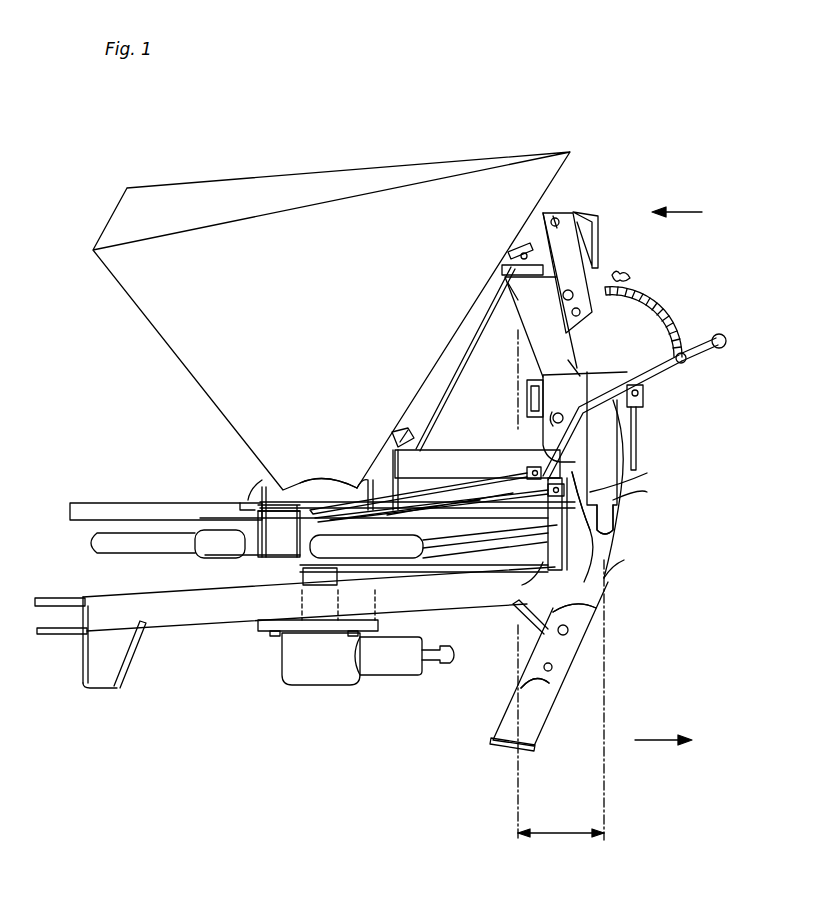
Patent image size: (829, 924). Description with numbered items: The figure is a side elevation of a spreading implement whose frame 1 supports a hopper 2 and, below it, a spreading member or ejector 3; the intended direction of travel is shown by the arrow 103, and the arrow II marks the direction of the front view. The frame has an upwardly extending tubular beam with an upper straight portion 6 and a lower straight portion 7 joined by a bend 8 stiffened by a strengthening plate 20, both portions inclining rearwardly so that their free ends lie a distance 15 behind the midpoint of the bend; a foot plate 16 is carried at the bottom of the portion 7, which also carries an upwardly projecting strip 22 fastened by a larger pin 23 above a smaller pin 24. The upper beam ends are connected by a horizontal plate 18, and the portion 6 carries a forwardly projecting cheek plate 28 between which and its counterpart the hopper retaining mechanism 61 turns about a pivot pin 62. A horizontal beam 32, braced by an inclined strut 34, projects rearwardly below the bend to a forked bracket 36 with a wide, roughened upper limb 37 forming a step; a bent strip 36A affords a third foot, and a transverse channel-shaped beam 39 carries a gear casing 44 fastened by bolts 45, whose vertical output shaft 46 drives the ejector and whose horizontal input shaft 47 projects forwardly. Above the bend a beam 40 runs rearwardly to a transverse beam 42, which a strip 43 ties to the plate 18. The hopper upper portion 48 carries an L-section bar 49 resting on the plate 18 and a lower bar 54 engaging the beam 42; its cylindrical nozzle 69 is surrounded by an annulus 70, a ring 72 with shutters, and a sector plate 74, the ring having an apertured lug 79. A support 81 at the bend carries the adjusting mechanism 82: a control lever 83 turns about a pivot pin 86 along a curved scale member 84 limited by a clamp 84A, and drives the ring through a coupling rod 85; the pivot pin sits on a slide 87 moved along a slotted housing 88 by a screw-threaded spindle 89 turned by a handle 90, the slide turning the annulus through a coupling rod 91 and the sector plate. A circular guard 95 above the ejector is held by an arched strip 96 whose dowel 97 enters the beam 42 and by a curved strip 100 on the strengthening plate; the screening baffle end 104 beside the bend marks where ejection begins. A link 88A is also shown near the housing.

The frame 1 is at (628, 546).
The hopper 2 is at (156, 333).
The spreading member or ejector 3 is at (150, 552).
The straight portion 6 is at (526, 320).
The straight portion 7 is at (536, 731).
The bend 8 is at (612, 563).
The distance 15 is at (568, 834).
The foot plate 16 is at (492, 745).
The plate 18 is at (505, 302).
The strengthening plate 20 is at (607, 583).
The strip 22 is at (552, 692).
The pin 23 is at (570, 630).
The pin 24 is at (553, 667).
The cheek plate 28 is at (590, 309).
The beam 32 is at (156, 632).
The strut 34 is at (516, 614).
The forked bracket 36 is at (48, 637).
The bent strip 36A is at (115, 690).
The upper limb 37 is at (72, 597).
The channel-shaped beam 39 is at (380, 617).
The beam 40 is at (443, 448).
The transverse beam 42 is at (411, 425).
The strip 43 is at (462, 381).
The gear casing 44 is at (280, 670).
The bolts 45 is at (350, 638).
The output shaft 46 is at (305, 574).
The input shaft 47 is at (434, 666).
The upper portion 48 is at (571, 153).
The bar 49 is at (498, 262).
The bar 54 is at (392, 433).
The retaining mechanism 61 is at (622, 217).
The pivot pin 62 is at (558, 219).
The cylindrical nozzle 69 is at (266, 486).
The annulus 70 is at (262, 536).
The ring 72 is at (265, 508).
The sector plate 74 is at (345, 546).
The lug 79 is at (305, 487).
The support 81 is at (620, 507).
The adjusting mechanism 82 is at (647, 307).
The control lever 83 is at (618, 375).
The curved member 84 is at (673, 339).
The clamp 84A is at (618, 274).
The coupling rod 85 is at (486, 478).
The pivot pin 86 is at (585, 453).
The slide 87 is at (587, 358).
The slotted housing 88 is at (528, 401).
The link 88A is at (647, 489).
The screw-threaded spindle 89 is at (646, 396).
The handle 90 is at (638, 458).
The coupling rod 91 is at (480, 500).
The circular guard 95 is at (93, 501).
The arched strip 96 is at (372, 468).
The dowel 97 is at (398, 466).
The curved strip 100 is at (636, 475).
The direction of travel 103 is at (678, 734).
The end 104 is at (528, 580).
The view arrow II is at (700, 207).